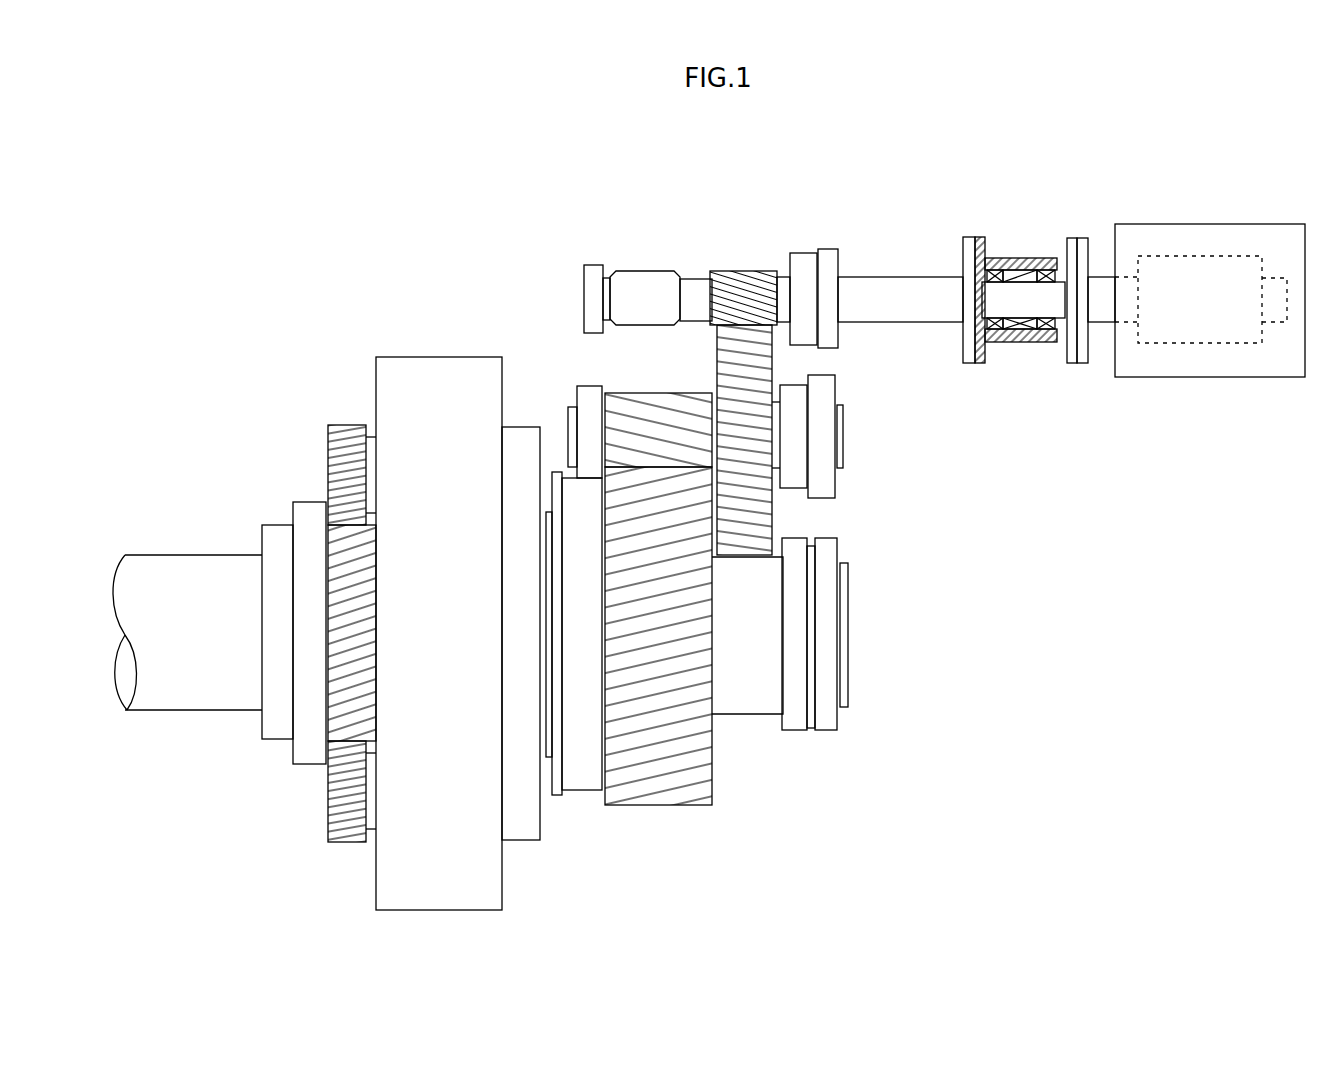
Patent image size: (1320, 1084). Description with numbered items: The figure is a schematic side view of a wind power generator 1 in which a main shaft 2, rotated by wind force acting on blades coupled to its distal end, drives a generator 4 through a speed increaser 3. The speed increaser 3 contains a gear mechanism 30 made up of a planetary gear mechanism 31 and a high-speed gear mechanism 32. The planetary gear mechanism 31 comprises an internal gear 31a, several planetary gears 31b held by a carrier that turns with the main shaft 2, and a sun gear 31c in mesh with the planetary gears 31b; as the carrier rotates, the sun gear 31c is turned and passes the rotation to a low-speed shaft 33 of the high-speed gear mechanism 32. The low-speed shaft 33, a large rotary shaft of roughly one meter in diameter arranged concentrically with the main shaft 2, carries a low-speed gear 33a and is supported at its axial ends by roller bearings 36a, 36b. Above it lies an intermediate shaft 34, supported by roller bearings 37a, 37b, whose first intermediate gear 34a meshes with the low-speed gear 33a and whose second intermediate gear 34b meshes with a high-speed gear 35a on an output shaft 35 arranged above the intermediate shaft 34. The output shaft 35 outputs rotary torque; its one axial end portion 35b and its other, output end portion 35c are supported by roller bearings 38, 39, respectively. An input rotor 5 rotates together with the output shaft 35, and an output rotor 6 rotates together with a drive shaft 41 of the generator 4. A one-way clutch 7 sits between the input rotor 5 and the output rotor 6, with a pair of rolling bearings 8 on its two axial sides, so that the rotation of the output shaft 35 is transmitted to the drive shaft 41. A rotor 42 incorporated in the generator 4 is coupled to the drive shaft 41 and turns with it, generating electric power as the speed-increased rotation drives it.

The wind power generator 1 is at (1083, 205).
The main shaft 2 is at (152, 565).
The speed increaser 3 is at (433, 308).
The generator 4 is at (1181, 380).
The input rotor 5 is at (1015, 258).
The output rotor 6 is at (1030, 293).
The one-way clutch 7 is at (1020, 330).
The rolling bearings 8 is at (1002, 330).
The gear mechanism 30 is at (375, 357).
The planetary gear mechanism 31 is at (463, 355).
The internal gear 31a is at (405, 365).
The planetary gears 31b is at (330, 447).
The sun gear 31c is at (330, 573).
The high-speed gear mechanism 32 is at (733, 235).
The low-speed shaft 33 is at (745, 714).
The low-speed gear 33a is at (657, 793).
The intermediate shaft 34 is at (569, 406).
The first intermediate gear 34a is at (651, 400).
The second intermediate gear 34b is at (760, 360).
The output shaft 35 is at (648, 268).
The high-speed gear 35a is at (748, 271).
The one axial end portion 35b is at (625, 272).
The other axial end portion 35c is at (890, 277).
The roller bearing 36a is at (583, 780).
The roller bearing 36b is at (790, 730).
The roller bearing 37a is at (590, 390).
The roller bearing 37b is at (797, 403).
The roller bearing 38 is at (590, 265).
The roller bearing 39 is at (803, 253).
The drive shaft 41 is at (1103, 325).
The rotor 42 is at (1233, 337).